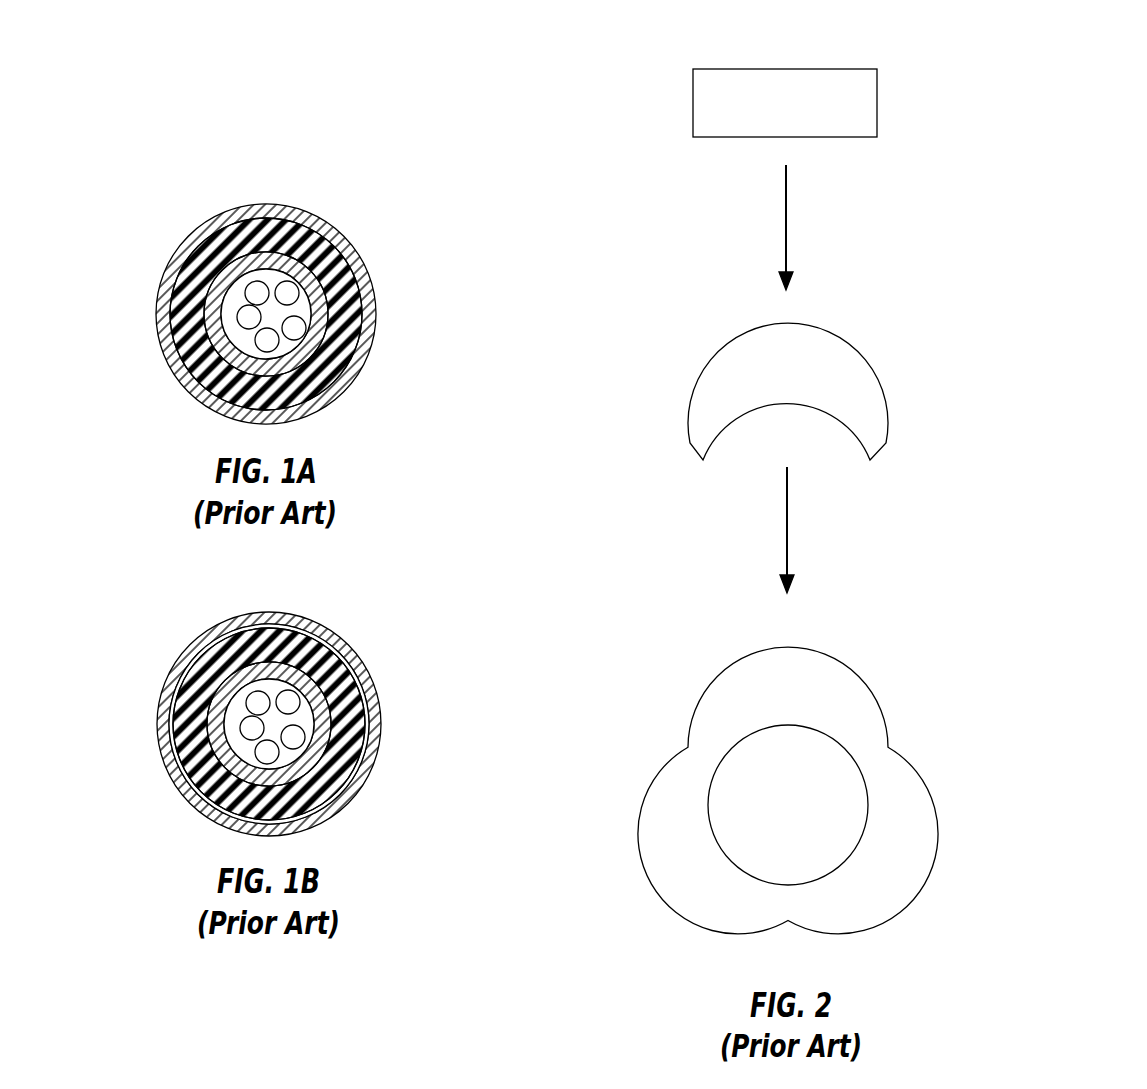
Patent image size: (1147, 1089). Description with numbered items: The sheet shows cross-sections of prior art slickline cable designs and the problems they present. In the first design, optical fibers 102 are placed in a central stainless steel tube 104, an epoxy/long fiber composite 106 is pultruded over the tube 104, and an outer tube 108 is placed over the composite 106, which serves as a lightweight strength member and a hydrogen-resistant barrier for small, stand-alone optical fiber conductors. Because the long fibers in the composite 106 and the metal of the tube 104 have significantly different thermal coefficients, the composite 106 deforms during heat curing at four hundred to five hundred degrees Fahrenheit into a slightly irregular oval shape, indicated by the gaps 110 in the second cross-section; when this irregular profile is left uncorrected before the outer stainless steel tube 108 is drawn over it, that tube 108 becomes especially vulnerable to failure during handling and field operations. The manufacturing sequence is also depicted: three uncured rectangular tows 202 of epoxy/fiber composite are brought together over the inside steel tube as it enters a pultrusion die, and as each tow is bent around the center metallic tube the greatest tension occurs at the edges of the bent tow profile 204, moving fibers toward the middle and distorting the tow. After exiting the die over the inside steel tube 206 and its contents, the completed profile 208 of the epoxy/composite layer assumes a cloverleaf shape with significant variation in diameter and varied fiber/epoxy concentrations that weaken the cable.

In FIG. 1A, the optical fibers 102 is at (293, 330).
In FIG. 1B, the optical fibers 102 is at (269, 724).
In FIG. 1A, the central stainless steel tube 104 is at (302, 257).
In FIG. 1B, the central stainless steel tube 104 is at (172, 777).
In FIG. 1A, the epoxy/long fiber composite 106 is at (357, 281).
In FIG. 1B, the epoxy/long fiber composite 106 is at (375, 742).
In FIG. 1A, the outer tube 108 is at (263, 213).
In FIG. 1B, the outer tube 108 is at (333, 645).
In FIG. 1B, the gaps 110 is at (257, 628).
In FIG. 2, the tows 202 is at (717, 103).
In FIG. 2, the bent tow profile 204 is at (705, 395).
In FIG. 2, the inside steel tube 206 is at (848, 775).
In FIG. 2, the completed profile 208 is at (657, 792).